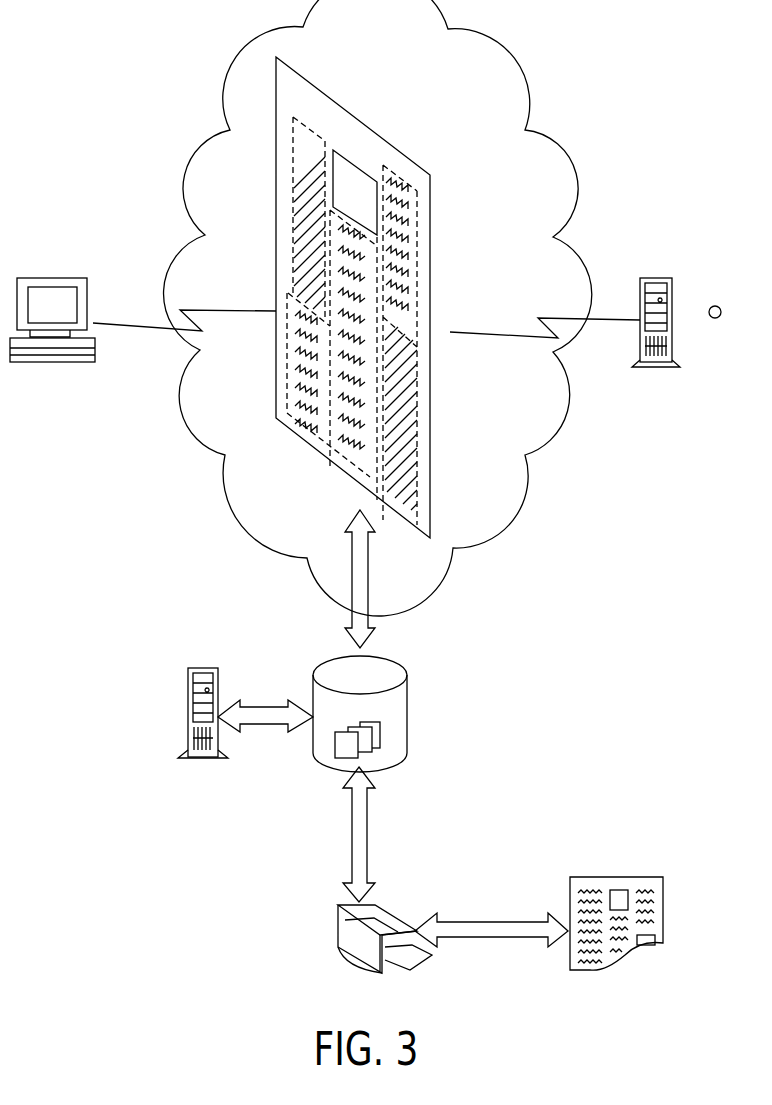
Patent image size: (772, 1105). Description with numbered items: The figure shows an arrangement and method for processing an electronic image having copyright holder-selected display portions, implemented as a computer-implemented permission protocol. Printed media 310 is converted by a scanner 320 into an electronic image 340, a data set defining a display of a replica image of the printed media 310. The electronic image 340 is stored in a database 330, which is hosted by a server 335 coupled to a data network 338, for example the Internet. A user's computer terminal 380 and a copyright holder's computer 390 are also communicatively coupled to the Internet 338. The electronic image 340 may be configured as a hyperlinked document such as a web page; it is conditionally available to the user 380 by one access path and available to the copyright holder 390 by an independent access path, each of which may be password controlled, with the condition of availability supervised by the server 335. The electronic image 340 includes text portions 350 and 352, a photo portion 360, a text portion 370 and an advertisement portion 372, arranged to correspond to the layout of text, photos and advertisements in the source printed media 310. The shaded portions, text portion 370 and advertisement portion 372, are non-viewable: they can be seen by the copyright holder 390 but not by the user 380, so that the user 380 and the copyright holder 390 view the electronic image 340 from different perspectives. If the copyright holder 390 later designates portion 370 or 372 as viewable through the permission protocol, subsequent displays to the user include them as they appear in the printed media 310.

The printed media 310 is at (625, 875).
The scanner 320 is at (393, 912).
The database 330 is at (407, 730).
The server 335 is at (188, 693).
The data network 338 is at (533, 497).
The electronic image 340 is at (430, 478).
The text portion 350 is at (307, 428).
The text portion 352 is at (418, 227).
The photo portion 360 is at (358, 163).
The text portion 370 is at (318, 130).
The advertisement portion 372 is at (420, 412).
The user's computer terminal 380 is at (52, 363).
The copyright holder's computer 390 is at (672, 298).